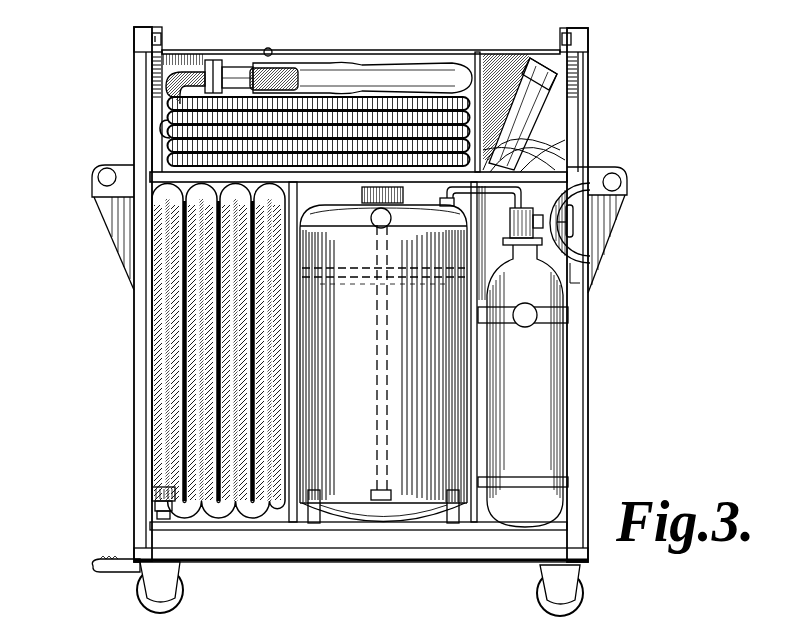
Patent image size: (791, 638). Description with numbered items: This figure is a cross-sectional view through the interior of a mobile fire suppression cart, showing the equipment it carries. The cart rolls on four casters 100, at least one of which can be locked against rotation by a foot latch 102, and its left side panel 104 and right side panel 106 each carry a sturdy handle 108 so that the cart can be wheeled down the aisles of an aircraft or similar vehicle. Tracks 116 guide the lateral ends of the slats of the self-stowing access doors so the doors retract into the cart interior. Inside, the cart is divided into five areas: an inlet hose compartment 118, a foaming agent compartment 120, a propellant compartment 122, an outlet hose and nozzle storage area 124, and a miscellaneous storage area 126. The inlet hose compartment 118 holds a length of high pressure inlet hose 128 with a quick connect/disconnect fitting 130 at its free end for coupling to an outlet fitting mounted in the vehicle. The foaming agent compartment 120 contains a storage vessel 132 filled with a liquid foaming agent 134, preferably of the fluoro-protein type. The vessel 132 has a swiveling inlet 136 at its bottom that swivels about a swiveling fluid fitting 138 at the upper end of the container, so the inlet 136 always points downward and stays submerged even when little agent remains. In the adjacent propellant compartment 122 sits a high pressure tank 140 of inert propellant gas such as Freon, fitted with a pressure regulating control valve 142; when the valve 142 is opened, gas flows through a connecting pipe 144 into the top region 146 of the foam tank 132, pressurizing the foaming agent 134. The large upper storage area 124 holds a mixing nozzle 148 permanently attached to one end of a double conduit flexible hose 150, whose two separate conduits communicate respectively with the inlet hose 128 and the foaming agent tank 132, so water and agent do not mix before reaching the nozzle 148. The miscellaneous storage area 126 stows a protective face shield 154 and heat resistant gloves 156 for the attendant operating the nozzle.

The casters 100 is at (183, 588).
The foot latch 102 is at (103, 560).
The left side panel 104 is at (137, 363).
The right side panel 106 is at (587, 363).
The handle 108 is at (92, 172).
The tracks 116 is at (162, 40).
The inlet hose compartment 118 is at (152, 187).
The foaming agent compartment 120 is at (316, 196).
The propellant compartment 122 is at (497, 228).
The outlet hose and nozzle storage area 124 is at (385, 60).
The miscellaneous storage area 126 is at (507, 63).
The inlet hose 128 is at (173, 418).
The quick connect/disconnect fitting 130 is at (152, 503).
The storage vessel 132 is at (352, 490).
The liquid foaming agent 134 is at (323, 307).
The swiveling inlet 136 is at (392, 506).
The swiveling fluid fitting 138 is at (379, 210).
The high pressure tank 140 is at (538, 397).
The pressure regulating control valve 142 is at (570, 223).
The connecting pipe 144 is at (568, 172).
The top region 146 is at (407, 250).
The mixing nozzle 148 is at (290, 65).
The double conduit flexible hose 150 is at (162, 117).
The protective face shield 154 is at (553, 90).
The heat resistant gloves 156 is at (560, 148).